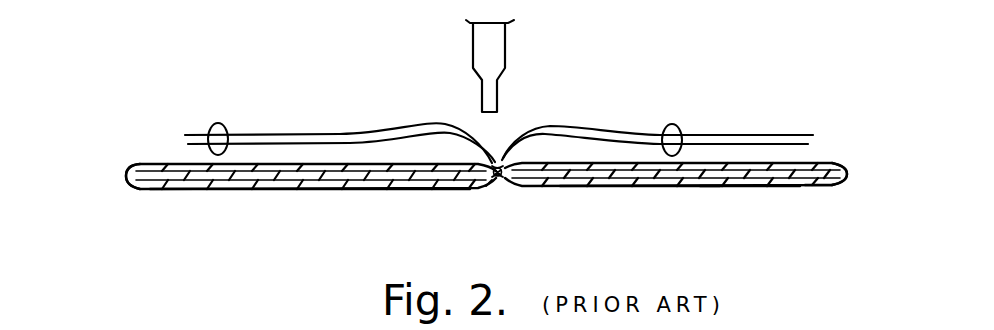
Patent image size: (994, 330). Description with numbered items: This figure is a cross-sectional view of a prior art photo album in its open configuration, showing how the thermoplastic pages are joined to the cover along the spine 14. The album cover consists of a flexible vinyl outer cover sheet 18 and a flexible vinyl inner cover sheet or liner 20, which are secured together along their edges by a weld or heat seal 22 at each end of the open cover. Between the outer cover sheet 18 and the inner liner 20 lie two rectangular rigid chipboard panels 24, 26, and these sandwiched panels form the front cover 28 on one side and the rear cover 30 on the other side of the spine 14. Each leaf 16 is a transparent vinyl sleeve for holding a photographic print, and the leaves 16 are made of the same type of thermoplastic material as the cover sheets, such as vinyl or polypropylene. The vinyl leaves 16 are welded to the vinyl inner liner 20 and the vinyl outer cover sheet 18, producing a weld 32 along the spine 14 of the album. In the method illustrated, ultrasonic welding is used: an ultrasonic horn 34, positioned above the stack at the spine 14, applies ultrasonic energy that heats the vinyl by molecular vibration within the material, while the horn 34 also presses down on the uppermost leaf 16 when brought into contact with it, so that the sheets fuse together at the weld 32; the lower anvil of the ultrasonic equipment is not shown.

The spine 14 is at (480, 188).
The leaf 16 is at (222, 124).
The outer cover sheet 18 is at (637, 184).
The inner cover sheet or liner 20 is at (822, 162).
The weld or heat seal 22 is at (127, 172).
The rigid panel 24 is at (218, 181).
The rigid panel 26 is at (725, 186).
The front cover 28 is at (307, 189).
The rear cover 30 is at (828, 183).
The weld 32 is at (493, 178).
The ultrasonic horn 34 is at (507, 57).